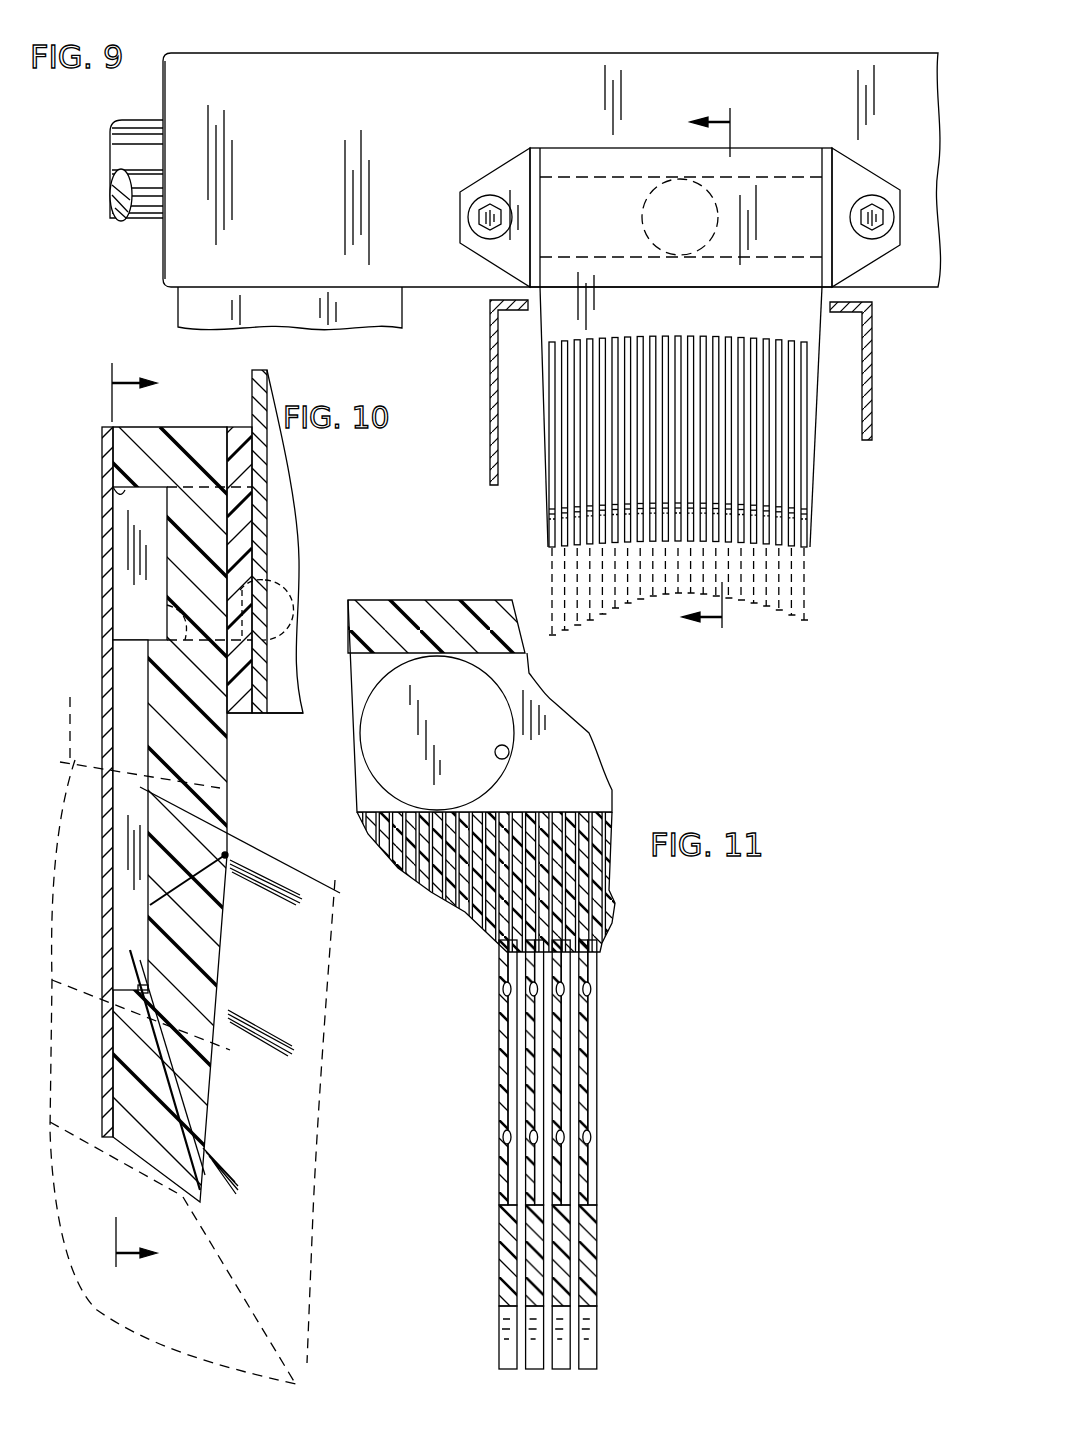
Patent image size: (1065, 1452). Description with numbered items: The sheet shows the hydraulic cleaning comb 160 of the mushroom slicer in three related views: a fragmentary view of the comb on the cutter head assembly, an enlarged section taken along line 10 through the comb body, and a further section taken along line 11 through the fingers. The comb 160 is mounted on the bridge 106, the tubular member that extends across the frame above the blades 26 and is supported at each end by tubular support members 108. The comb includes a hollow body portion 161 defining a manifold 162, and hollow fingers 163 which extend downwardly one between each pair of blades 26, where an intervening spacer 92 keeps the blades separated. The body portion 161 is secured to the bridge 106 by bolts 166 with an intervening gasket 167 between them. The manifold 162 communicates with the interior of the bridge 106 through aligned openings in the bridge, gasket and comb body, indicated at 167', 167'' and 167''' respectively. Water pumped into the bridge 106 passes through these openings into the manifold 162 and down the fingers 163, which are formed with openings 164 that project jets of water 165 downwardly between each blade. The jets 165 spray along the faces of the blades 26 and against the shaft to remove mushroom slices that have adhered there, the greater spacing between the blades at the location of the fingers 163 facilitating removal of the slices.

In FIG. 9, the section line 10— 10 is at (720, 371).
In FIG. 10, the section line 11— 11 is at (124, 821).
In FIG. 9, the blades 26 is at (790, 601).
In FIG. 10, the blades 26 is at (195, 1029).
In FIG. 10, the spacer 92 is at (266, 1270).
In FIG. 9, the bridge 106 is at (385, 53).
In FIG. 10, the bridge 106 is at (252, 393).
In FIG. 9, the tubular support members 108 is at (178, 298).
In FIG. 9, the hydraulic cleaning comb 160 is at (820, 449).
In FIG. 10, the hydraulic cleaning comb 160 is at (95, 625).
In FIG. 9, the hollow body portion 161 is at (555, 148).
In FIG. 9, the manifold 162 is at (783, 177).
In FIG. 10, the manifold 162 is at (113, 493).
In FIG. 11, the manifold 162 is at (530, 676).
In FIG. 9, the hollow fingers 163 is at (812, 540).
In FIG. 10, the hollow fingers 163 is at (218, 950).
In FIG. 11, the hollow fingers 163 is at (504, 1230).
In FIG. 10, the openings 164 is at (228, 853).
In FIG. 11, the openings 164 is at (499, 989).
In FIG. 10, the jets of water 165 is at (285, 887).
In FIG. 9, the bolts 166 is at (490, 206).
In FIG. 10, the gasket 167 is at (265, 741).
In FIG. 10, the opening in the bridge 167' is at (299, 603).
In FIG. 10, the opening in the gasket 167'' is at (291, 590).
In FIG. 9, the opening in the comb body 167''' is at (640, 217).
In FIG. 10, the opening in the comb body 167''' is at (152, 612).
In FIG. 11, the opening in the comb body 167''' is at (545, 757).